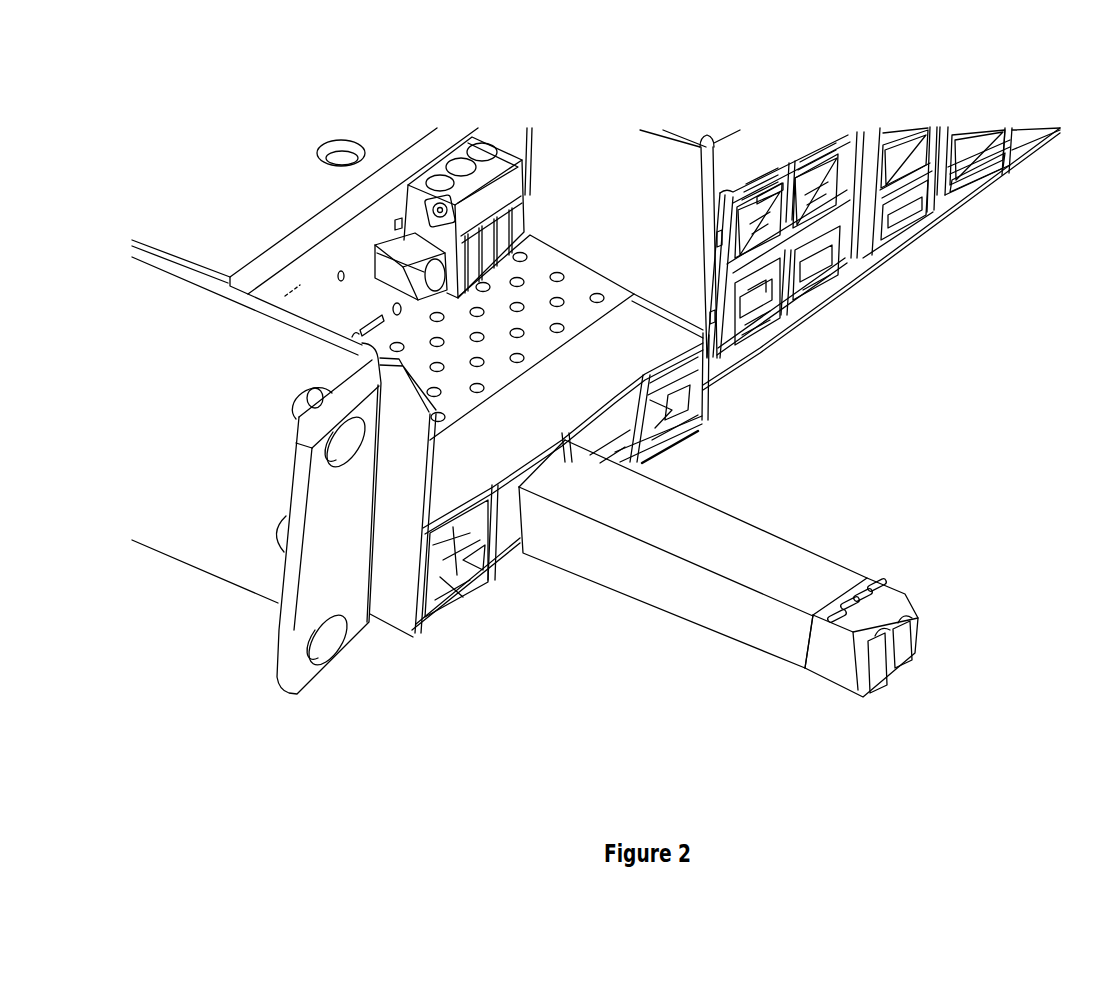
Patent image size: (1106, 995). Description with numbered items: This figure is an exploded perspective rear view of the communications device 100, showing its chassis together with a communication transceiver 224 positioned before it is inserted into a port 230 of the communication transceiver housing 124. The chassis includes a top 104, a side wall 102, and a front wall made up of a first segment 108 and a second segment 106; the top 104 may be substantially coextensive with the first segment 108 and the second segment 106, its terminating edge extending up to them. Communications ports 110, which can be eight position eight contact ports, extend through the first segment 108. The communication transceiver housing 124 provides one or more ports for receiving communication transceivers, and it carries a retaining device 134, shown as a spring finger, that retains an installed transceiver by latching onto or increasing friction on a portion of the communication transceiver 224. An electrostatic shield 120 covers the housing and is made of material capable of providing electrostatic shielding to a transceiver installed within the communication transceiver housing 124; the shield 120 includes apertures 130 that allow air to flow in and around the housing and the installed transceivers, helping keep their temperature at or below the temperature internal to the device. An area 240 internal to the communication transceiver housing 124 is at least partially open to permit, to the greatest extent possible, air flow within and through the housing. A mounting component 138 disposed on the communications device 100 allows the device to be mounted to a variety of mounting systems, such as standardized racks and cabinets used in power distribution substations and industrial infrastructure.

The communications device 100 is at (928, 397).
The side wall 102 is at (207, 283).
The top 104 is at (267, 193).
The second segment 106 is at (307, 267).
The first segment 108 is at (857, 267).
The communications ports 110 is at (753, 193).
The electrostatic shield 120 is at (508, 379).
The communication transceiver housing 124 is at (497, 458).
The apertures 130 is at (552, 329).
The retaining device 134 is at (700, 418).
The mounting component 138 is at (302, 675).
The communication transceiver 224 is at (778, 542).
The port 230 is at (507, 553).
The area 240 is at (438, 568).